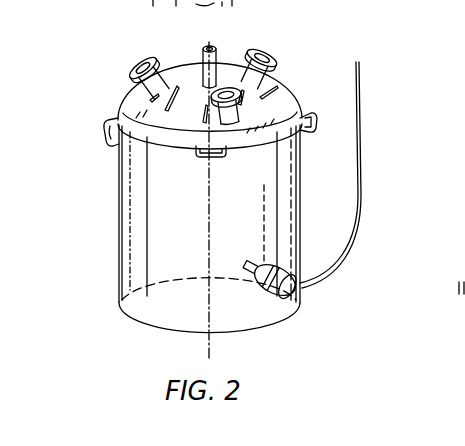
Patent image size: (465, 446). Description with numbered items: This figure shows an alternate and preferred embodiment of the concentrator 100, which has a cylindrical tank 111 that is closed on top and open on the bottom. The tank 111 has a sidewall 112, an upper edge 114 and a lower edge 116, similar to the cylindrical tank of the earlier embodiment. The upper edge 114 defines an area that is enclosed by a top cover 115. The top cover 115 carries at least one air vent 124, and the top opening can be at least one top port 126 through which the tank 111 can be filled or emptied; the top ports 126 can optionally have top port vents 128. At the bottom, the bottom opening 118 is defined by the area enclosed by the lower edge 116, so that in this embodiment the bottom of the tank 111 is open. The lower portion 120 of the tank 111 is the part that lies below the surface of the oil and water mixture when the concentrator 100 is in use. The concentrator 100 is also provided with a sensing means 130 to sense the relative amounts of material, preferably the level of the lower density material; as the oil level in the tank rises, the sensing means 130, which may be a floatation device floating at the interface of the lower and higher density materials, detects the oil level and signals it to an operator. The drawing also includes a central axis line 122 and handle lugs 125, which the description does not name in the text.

The concentrator 100 is at (117, 244).
The cylindrical tank 111 is at (298, 156).
The sidewall 112 is at (278, 236).
The upper edge 114 is at (147, 137).
The top cover 115 is at (150, 107).
The lower edge 116 is at (285, 318).
The bottom opening 118 is at (182, 309).
The lower portion 120 is at (120, 292).
The central axis 122 is at (212, 345).
The air vent 124 is at (202, 50).
The handle lugs 125 is at (318, 114).
The top port 126 is at (132, 66).
The top port vent 128 is at (178, 92).
The sensing means 130 is at (300, 302).